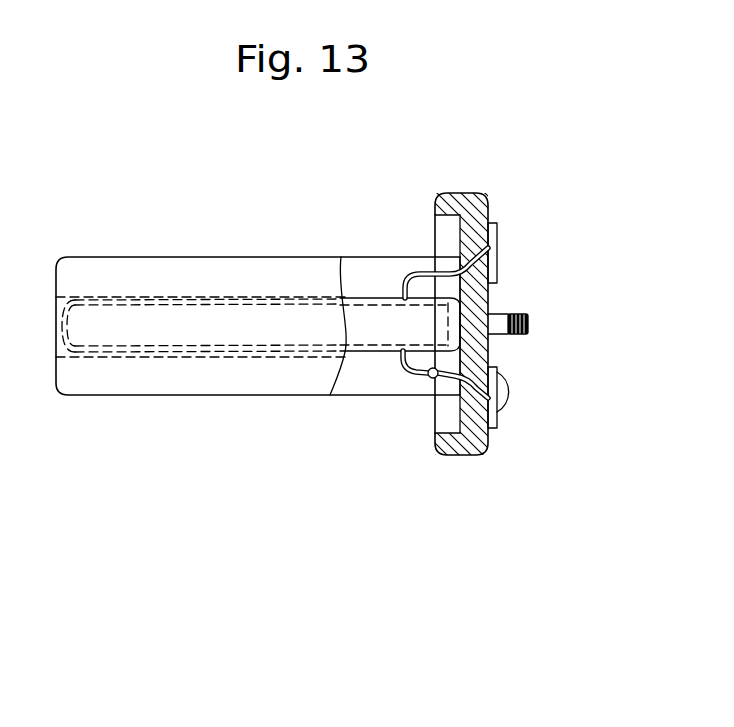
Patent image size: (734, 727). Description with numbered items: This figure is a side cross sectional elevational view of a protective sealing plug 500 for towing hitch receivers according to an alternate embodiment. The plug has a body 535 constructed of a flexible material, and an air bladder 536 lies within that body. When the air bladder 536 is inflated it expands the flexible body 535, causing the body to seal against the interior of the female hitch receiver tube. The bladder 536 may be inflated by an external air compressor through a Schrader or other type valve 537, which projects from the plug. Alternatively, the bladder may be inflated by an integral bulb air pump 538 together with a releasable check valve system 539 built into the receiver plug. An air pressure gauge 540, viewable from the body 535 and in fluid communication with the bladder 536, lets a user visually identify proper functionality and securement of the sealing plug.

The sealing plug 500 is at (246, 468).
The body 535 is at (152, 283).
The air bladder 536 is at (358, 327).
The valve 537 is at (517, 307).
The integral bulb air pump 538 is at (508, 413).
The releasable check valve system 539 is at (431, 378).
The air pressure gauge 540 is at (497, 222).